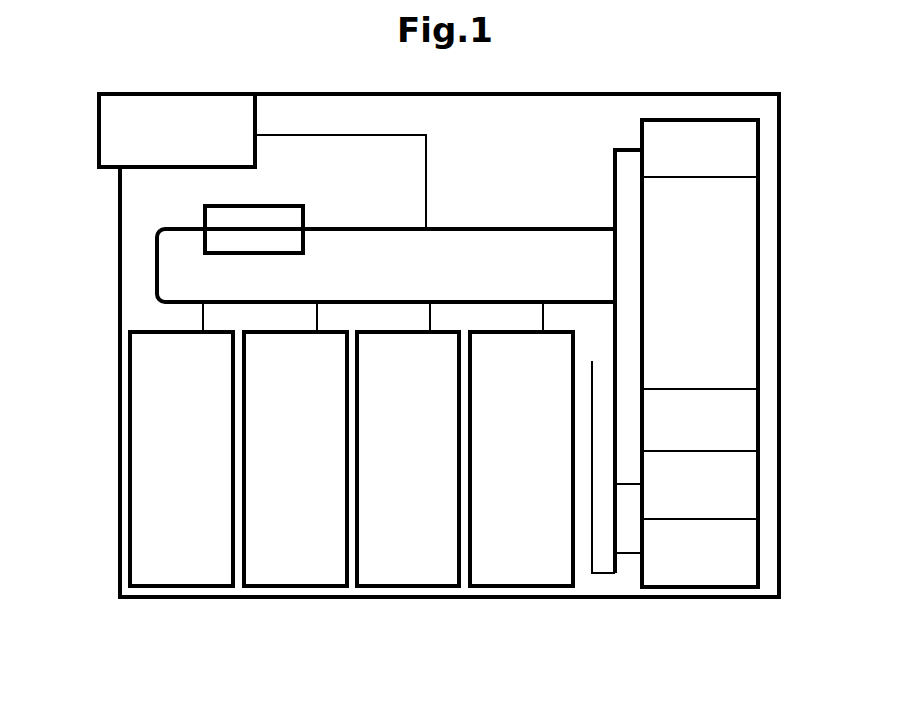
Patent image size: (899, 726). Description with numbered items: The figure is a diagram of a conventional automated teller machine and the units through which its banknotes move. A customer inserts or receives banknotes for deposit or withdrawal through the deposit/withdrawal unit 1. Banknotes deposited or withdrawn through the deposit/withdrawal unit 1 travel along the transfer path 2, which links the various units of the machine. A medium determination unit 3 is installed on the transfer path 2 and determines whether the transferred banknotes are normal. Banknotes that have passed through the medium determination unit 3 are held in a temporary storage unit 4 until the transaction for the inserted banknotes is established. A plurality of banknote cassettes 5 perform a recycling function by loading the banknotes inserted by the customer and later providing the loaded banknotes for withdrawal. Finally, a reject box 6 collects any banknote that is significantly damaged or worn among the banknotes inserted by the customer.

The deposit/withdrawal unit 1 is at (98, 135).
The transfer path 2 is at (426, 193).
The medium determination unit 3 is at (283, 206).
The temporary storage unit 4 is at (760, 146).
The banknote cassettes 5 is at (200, 590).
The reject box 6 is at (758, 485).